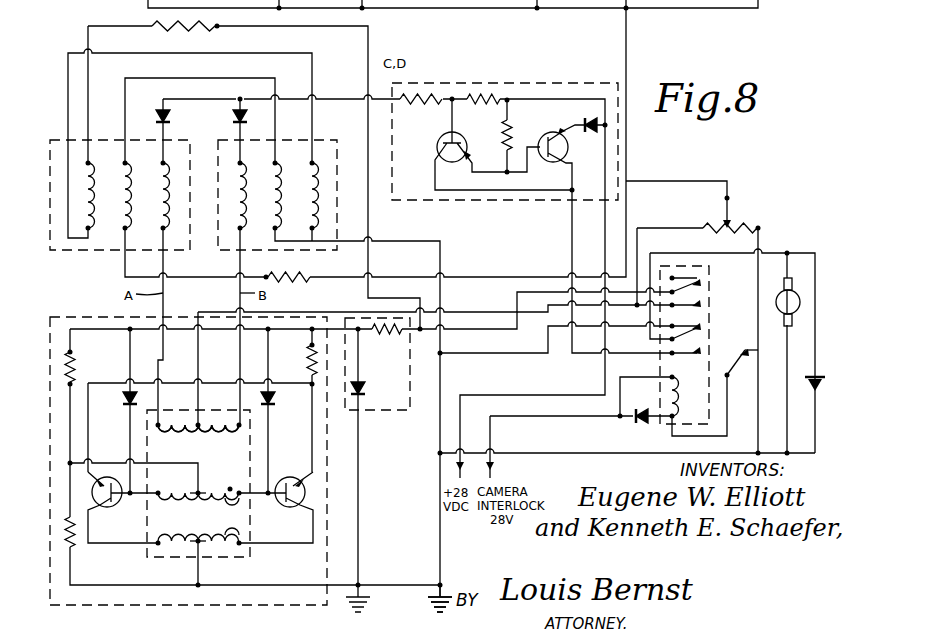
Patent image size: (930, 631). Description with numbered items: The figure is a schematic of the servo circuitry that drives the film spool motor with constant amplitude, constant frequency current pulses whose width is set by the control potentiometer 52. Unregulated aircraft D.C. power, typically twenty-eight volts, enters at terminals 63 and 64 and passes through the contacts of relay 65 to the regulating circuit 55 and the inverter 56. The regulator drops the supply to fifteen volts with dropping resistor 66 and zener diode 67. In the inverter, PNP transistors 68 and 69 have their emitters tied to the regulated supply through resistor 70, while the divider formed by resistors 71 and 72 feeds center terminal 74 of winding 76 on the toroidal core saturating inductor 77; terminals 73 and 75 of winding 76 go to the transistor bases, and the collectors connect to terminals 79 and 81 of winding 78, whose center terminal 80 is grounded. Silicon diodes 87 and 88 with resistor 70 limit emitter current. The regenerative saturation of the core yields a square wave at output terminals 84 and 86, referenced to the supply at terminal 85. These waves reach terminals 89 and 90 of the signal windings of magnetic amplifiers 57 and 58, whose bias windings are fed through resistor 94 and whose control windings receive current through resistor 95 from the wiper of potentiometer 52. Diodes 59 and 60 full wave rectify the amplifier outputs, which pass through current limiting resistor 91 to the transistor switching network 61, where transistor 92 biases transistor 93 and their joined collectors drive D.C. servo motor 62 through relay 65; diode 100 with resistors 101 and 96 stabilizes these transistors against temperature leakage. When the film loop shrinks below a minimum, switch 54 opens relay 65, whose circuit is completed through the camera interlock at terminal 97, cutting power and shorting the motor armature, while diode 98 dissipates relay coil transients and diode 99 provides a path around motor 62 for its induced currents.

The control potentiometer 52 is at (740, 218).
The switch 54 is at (741, 356).
The regulating circuit 55 is at (383, 410).
The inverter 56 is at (80, 317).
The magnetic amplifier 57 is at (52, 140).
The magnetic amplifier 58 is at (337, 140).
The diode 59 is at (160, 112).
The diode 60 is at (232, 120).
The transistor switching network 61 is at (618, 140).
The D.C. servo motor 62 is at (779, 295).
The terminal 63 is at (438, 585).
The terminal 64 is at (455, 478).
The relay 65 is at (709, 287).
The dropping resistor 66 is at (378, 334).
The zener diode 67 is at (368, 392).
The PNP transistor 68 is at (110, 502).
The PNP transistor 69 is at (290, 477).
The resistor 70 is at (309, 358).
The resistor 71 is at (75, 352).
The resistor 72 is at (75, 540).
The terminal 73 is at (173, 482).
The center terminal 74 is at (200, 492).
The terminal 75 is at (222, 483).
The winding 76 is at (238, 500).
The toroidal core saturating inductor 77 is at (255, 560).
The winding 78 is at (242, 540).
The terminal 79 is at (152, 548).
The center terminal 80 is at (195, 545).
The terminal 81 is at (240, 548).
The output terminal 84 is at (160, 430).
The terminal 85 is at (195, 425).
The output terminal 86 is at (240, 428).
The silicon diode 87 is at (275, 405).
The silicon diode 88 is at (125, 405).
The terminal 89 is at (162, 228).
The terminal 90 is at (240, 228).
The current limiting resistor 91 is at (410, 104).
The transistor 92 is at (437, 143).
The transistor 93 is at (557, 163).
The resistor 94 is at (190, 31).
The resistor 95 is at (288, 282).
The resistor 96 is at (486, 104).
The terminal 97 is at (493, 478).
The diode 98 is at (641, 425).
The diode 99 is at (815, 393).
The diode 100 is at (590, 132).
The resistor 101 is at (506, 135).